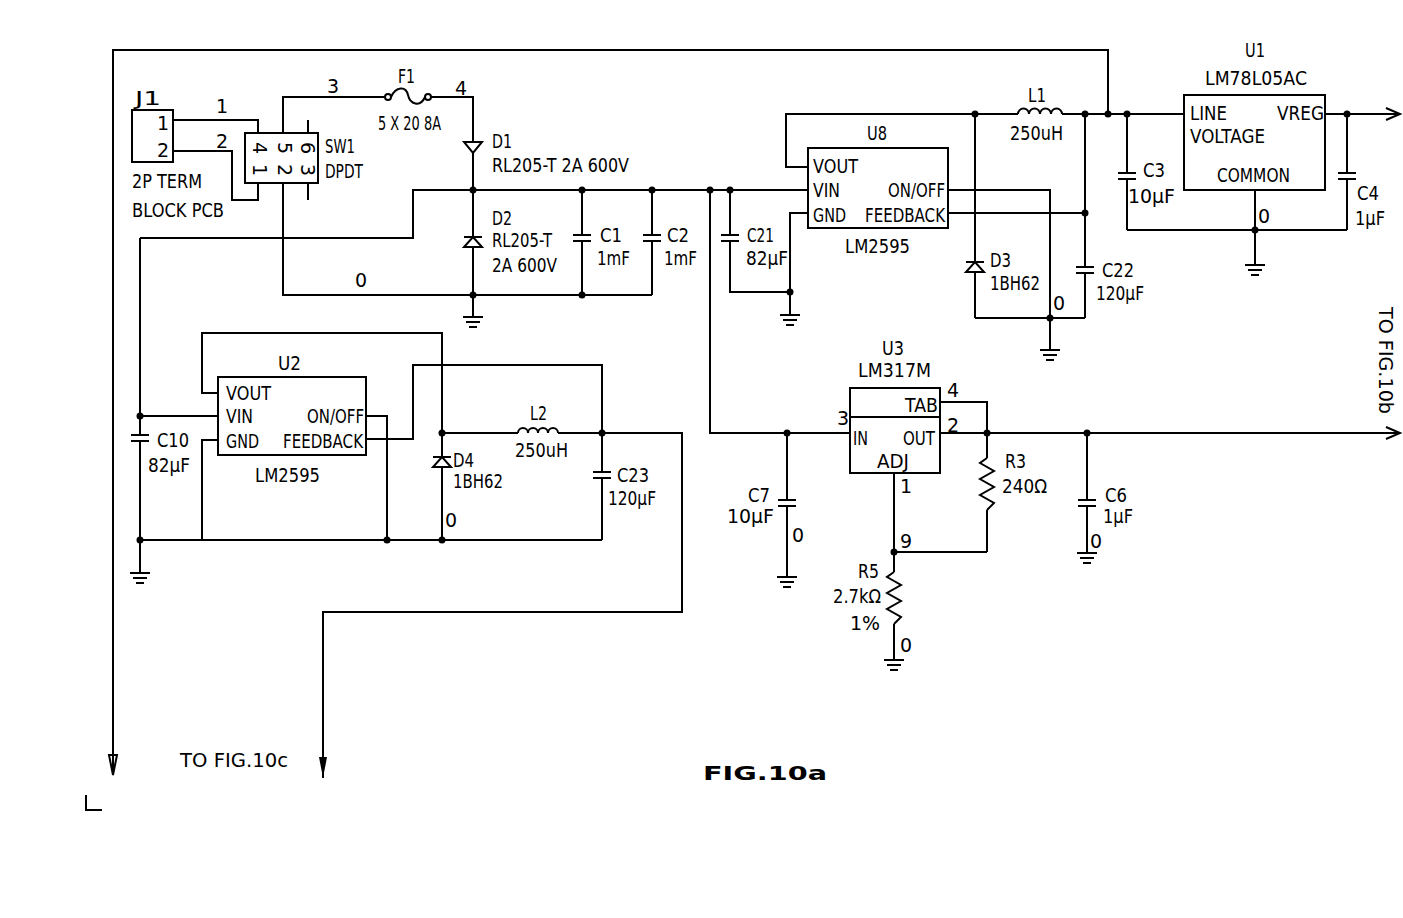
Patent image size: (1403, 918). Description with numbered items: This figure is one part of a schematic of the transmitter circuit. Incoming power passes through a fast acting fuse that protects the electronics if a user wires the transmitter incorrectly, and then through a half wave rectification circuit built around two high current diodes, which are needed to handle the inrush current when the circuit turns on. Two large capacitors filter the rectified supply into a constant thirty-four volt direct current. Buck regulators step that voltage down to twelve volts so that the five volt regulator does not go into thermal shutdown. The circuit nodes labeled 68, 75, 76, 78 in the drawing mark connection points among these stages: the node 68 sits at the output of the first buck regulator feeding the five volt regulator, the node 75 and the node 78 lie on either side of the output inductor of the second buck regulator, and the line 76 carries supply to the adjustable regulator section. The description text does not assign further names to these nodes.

The regulated output node of switching regulator U8 68 is at (1106, 137).
The output node of switching regulator U2 75 is at (480, 421).
The input supply line to regulator U3 76 is at (720, 311).
The filtered output node of inductor L2 78 is at (620, 421).